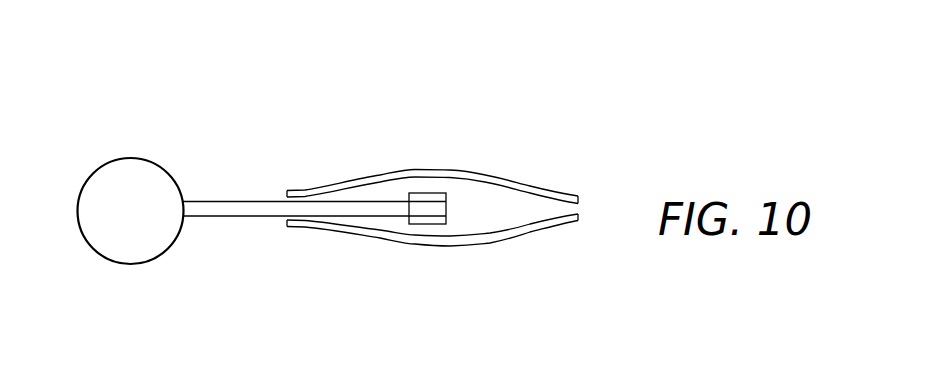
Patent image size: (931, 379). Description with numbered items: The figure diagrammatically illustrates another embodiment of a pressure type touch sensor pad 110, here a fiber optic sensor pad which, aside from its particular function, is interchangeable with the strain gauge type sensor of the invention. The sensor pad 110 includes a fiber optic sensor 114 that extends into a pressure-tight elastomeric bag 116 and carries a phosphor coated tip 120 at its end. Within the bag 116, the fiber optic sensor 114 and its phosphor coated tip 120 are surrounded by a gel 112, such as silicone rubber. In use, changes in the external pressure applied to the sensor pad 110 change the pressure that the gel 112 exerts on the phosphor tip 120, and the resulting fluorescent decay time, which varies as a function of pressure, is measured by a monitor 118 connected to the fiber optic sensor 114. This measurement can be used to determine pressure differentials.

The pressure type touch sensor pad 110 is at (452, 145).
The gel 112 is at (508, 215).
The fiber optic sensor 114 is at (260, 220).
The pressure-tight elastomeric bag 116 is at (422, 168).
The monitor 118 is at (112, 159).
The phosphor coated tip 120 is at (447, 208).